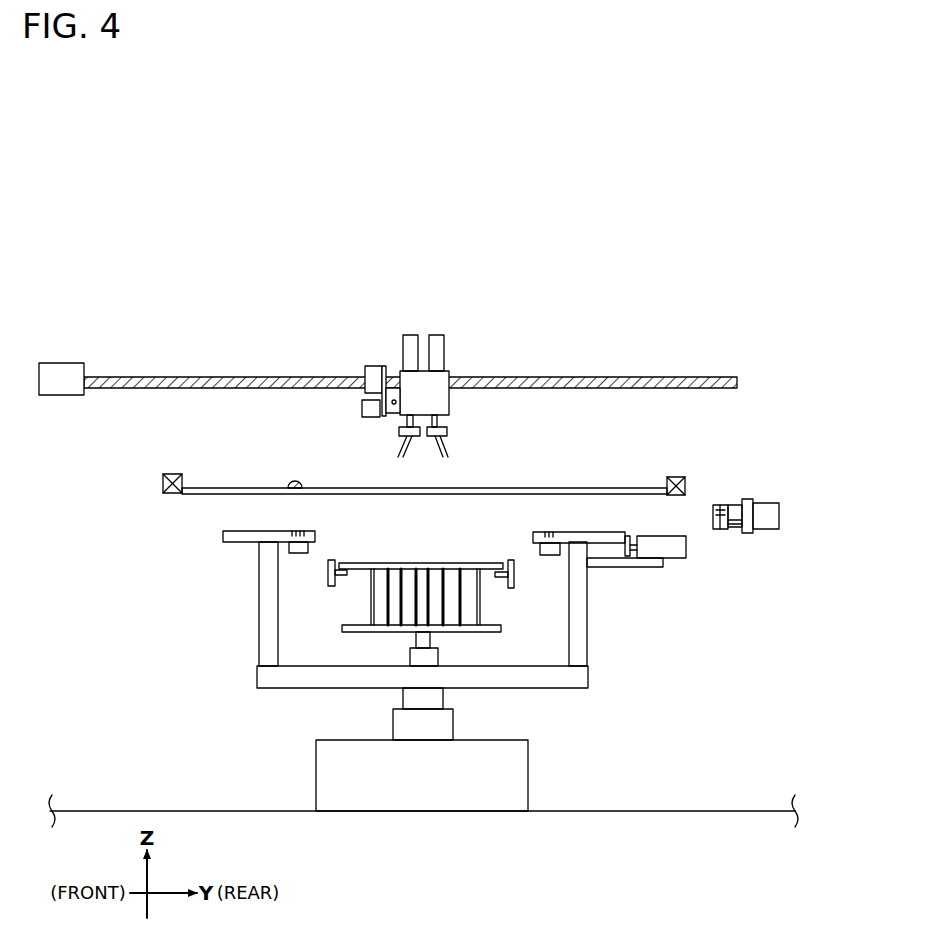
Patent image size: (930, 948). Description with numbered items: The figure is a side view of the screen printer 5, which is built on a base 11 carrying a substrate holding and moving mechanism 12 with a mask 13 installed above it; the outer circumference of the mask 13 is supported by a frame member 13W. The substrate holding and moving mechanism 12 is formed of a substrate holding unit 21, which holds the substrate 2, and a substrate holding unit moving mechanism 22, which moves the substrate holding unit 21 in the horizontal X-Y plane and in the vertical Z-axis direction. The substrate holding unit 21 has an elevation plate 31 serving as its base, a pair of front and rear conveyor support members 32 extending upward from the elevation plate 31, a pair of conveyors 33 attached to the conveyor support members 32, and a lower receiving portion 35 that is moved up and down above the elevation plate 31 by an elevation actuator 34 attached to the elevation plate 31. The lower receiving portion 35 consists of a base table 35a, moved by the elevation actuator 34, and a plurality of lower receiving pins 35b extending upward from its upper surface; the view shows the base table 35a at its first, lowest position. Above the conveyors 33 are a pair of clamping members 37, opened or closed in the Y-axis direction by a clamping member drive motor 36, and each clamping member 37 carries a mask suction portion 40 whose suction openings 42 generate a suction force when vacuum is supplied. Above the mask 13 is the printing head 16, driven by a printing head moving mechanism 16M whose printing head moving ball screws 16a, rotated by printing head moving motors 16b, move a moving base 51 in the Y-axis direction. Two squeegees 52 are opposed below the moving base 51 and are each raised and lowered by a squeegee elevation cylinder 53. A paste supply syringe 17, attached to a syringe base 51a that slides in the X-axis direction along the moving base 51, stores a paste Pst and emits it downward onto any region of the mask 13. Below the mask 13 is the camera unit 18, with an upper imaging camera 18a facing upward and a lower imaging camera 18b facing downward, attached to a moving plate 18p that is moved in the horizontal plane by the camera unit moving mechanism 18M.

The screen printer 5 is at (436, 140).
The base 11 is at (661, 811).
The substrate holding and moving mechanism 12 is at (364, 749).
The substrate holding unit moving mechanism 22 is at (323, 788).
The substrate holding unit 21 is at (441, 606).
The elevation plate 31 is at (556, 683).
The conveyor support members 32 is at (262, 650).
The clamping members 37 is at (240, 531).
The mask suction portion 40 is at (424, 527).
The suction openings 42 is at (303, 530).
The clamping member drive motor 36 is at (675, 558).
The lower receiving portion 35 is at (411, 624).
The conveyors 33 is at (328, 572).
The base table 35a is at (350, 631).
The lower receiving pins 35b is at (386, 603).
The substrate 2 is at (425, 565).
The elevation actuator 34 is at (386, 681).
The mask 13 is at (416, 454).
The frame member 13W is at (175, 473).
The paste Pst is at (289, 479).
The printing head 16 is at (386, 332).
The printing head moving ball screws 16a is at (247, 377).
The printing head moving motors 16b is at (58, 367).
The printing head moving mechanism 16M is at (134, 360).
The moving base 51 is at (425, 363).
The syringe base 51a is at (383, 367).
The paste supply syringe 17 is at (337, 369).
The squeegee elevation cylinder 53 is at (408, 334).
The squeegees 52 is at (400, 447).
The camera unit 18 is at (734, 516).
The camera unit moving mechanism 18M is at (772, 503).
The moving plate 18p is at (792, 536).
The lower imaging camera 18b is at (735, 505).
The upper imaging camera 18a is at (714, 522).